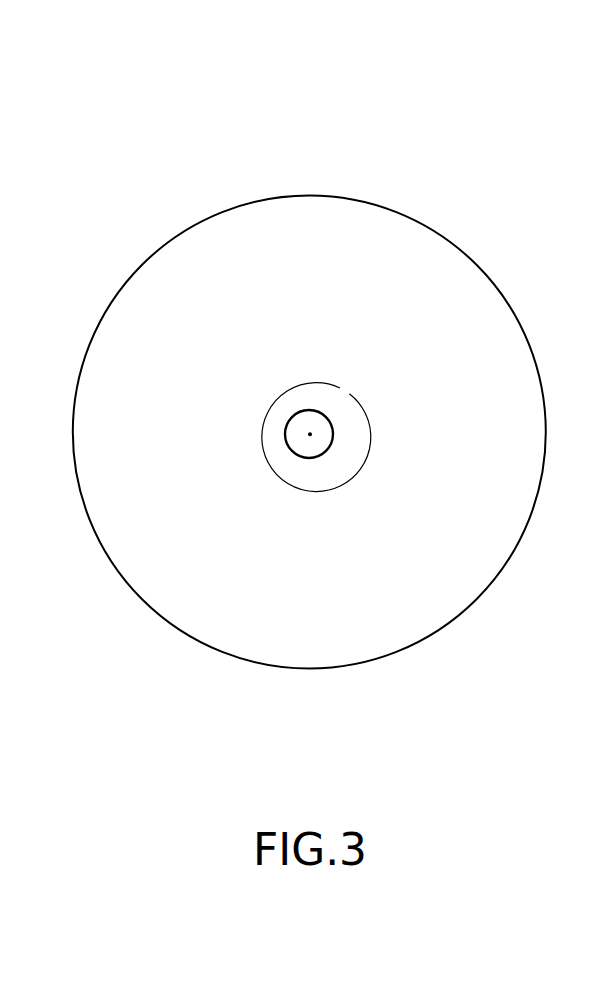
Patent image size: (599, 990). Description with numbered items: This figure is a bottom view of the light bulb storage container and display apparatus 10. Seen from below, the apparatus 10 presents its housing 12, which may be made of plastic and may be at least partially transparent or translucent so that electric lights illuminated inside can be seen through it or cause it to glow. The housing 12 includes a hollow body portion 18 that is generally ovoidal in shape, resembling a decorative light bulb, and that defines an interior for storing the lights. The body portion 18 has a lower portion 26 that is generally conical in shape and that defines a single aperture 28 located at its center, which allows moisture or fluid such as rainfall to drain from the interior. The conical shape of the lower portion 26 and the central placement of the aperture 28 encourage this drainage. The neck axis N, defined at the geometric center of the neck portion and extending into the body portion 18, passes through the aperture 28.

The apparatus 10 is at (130, 77).
The housing 12 is at (437, 362).
The hollow body portion 18 is at (317, 600).
The lower portion 26 is at (350, 453).
The aperture 28 is at (332, 427).
The axis N is at (308, 434).